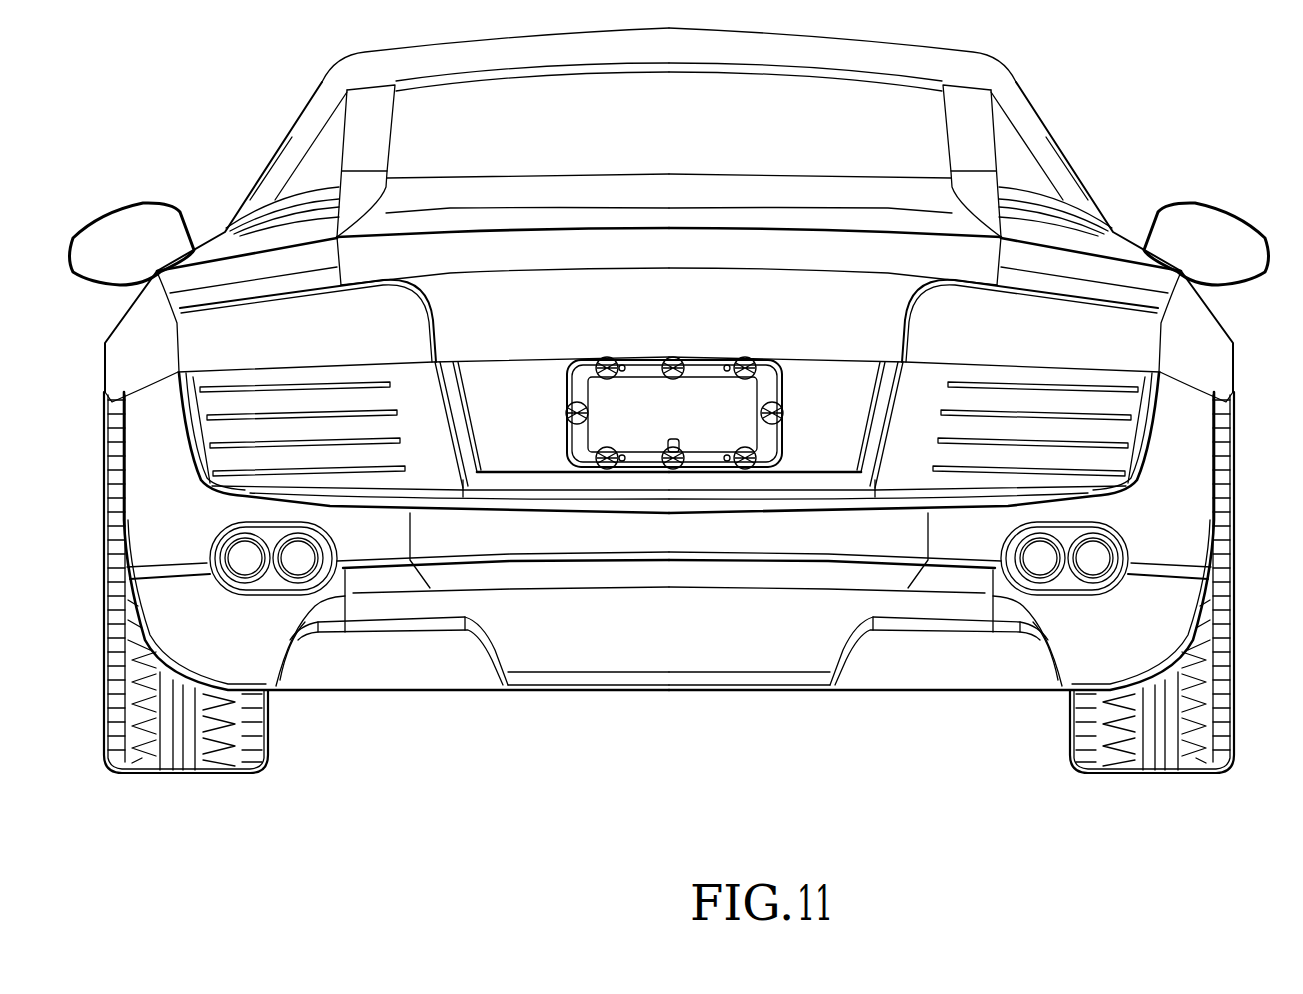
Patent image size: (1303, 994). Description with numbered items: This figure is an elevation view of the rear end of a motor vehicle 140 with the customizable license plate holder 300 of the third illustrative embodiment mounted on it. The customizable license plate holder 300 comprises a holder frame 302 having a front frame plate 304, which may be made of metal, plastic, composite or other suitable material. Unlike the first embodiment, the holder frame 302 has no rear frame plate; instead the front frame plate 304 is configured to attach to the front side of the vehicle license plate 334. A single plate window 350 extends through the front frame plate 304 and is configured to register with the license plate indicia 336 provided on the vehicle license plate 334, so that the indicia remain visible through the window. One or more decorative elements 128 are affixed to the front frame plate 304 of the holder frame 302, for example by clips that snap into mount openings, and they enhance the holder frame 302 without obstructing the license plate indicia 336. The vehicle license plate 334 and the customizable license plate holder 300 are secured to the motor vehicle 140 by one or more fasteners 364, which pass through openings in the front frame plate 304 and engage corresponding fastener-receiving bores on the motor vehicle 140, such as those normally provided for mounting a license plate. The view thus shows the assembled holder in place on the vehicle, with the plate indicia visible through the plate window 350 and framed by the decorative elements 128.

The motor vehicle 140 is at (332, 72).
The customizable license plate holder 300 is at (557, 372).
The holder frame 302 is at (788, 388).
The front frame plate 304 is at (774, 440).
The single plate window 350 is at (600, 396).
The license plate indicia 336 is at (592, 431).
The vehicle license plate 334 is at (705, 430).
The decorative element 128 is at (768, 530).
The fasteners 364 is at (620, 362).